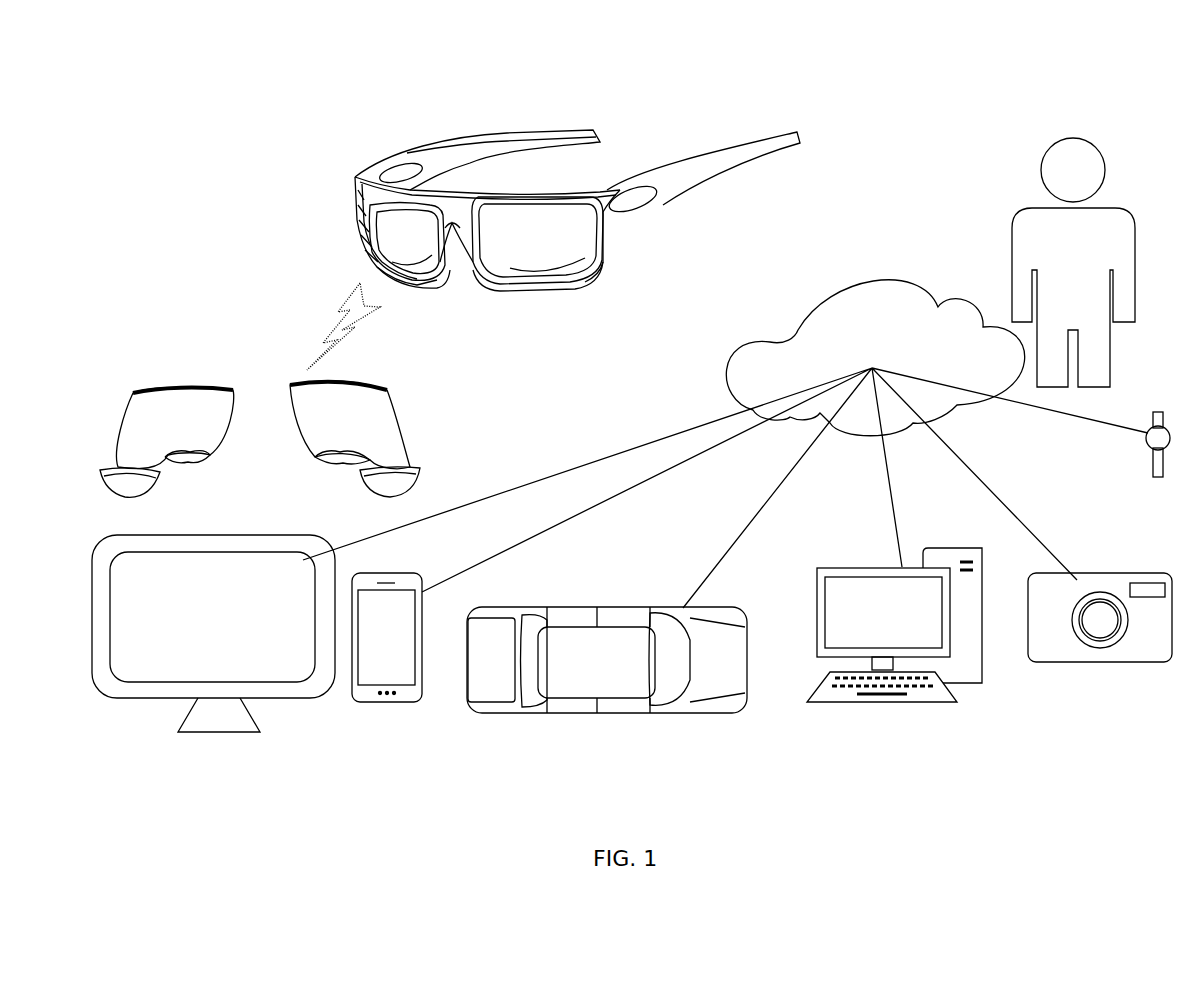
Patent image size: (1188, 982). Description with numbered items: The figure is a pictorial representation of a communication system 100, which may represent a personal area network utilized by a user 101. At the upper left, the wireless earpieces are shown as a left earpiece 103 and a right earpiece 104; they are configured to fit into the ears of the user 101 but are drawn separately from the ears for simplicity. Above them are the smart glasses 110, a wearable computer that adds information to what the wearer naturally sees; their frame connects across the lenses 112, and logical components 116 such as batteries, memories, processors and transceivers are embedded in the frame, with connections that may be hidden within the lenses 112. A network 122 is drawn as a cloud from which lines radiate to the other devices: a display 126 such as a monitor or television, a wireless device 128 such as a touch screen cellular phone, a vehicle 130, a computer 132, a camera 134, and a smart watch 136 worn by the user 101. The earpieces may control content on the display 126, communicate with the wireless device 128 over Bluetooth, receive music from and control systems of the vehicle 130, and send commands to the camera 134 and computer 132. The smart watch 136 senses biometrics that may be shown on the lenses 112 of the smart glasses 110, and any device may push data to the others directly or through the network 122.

The communication system 100 is at (160, 284).
The user 101 is at (1073, 262).
The left earpiece 103 is at (160, 400).
The right earpiece 104 is at (380, 417).
The smart glasses 110 is at (507, 132).
The lenses 112 is at (365, 238).
The logical components 116 is at (400, 173).
The network 122 is at (725, 444).
The display 126 is at (213, 633).
The wireless device 128 is at (370, 667).
The vehicle 130 is at (487, 712).
The computer 132 is at (840, 697).
The camera 134 is at (1045, 655).
The smart watch 136 is at (1162, 475).